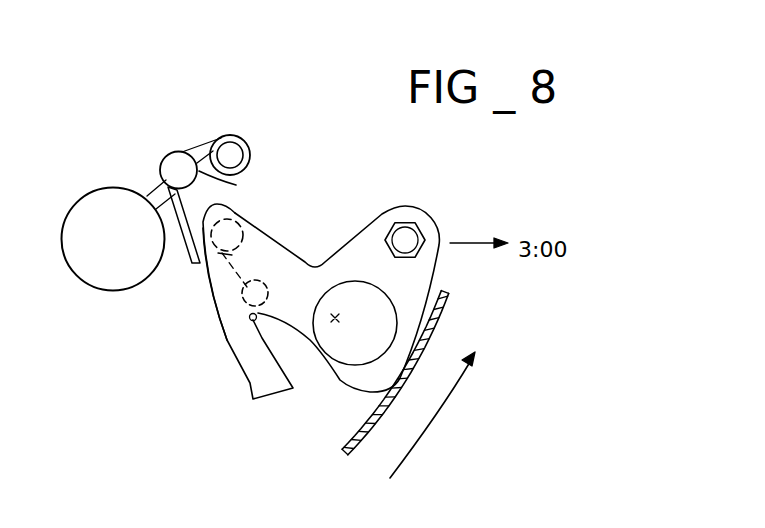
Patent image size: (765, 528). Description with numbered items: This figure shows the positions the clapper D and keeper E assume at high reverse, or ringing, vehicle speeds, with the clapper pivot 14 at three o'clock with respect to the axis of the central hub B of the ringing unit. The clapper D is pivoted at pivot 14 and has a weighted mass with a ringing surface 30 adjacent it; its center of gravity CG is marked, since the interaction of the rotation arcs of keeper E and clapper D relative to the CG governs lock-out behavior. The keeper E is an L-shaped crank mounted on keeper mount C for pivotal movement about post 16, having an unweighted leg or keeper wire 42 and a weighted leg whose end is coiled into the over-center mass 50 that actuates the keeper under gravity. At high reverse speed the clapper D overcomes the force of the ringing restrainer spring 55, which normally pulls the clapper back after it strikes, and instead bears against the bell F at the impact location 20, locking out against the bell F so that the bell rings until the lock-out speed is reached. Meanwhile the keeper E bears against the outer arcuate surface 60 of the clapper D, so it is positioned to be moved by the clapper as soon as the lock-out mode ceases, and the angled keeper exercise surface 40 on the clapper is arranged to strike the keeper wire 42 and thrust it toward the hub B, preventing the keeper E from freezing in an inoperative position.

The pivot 14 is at (408, 238).
The post 16 is at (168, 153).
The impact 20 is at (362, 442).
The ringing surface 30 is at (383, 395).
The keeper exercise surface 40 is at (253, 400).
The keeper wire 42 is at (197, 267).
The over-center mass 50 is at (247, 148).
The ringing restrainer spring 55 is at (216, 287).
The outer arcuate surface 60 is at (214, 308).
The central hub B is at (103, 188).
The keeper mount C is at (228, 185).
The center of gravity CG is at (335, 316).
The clapper D is at (367, 356).
The keeper E is at (200, 140).
The bell F is at (352, 450).